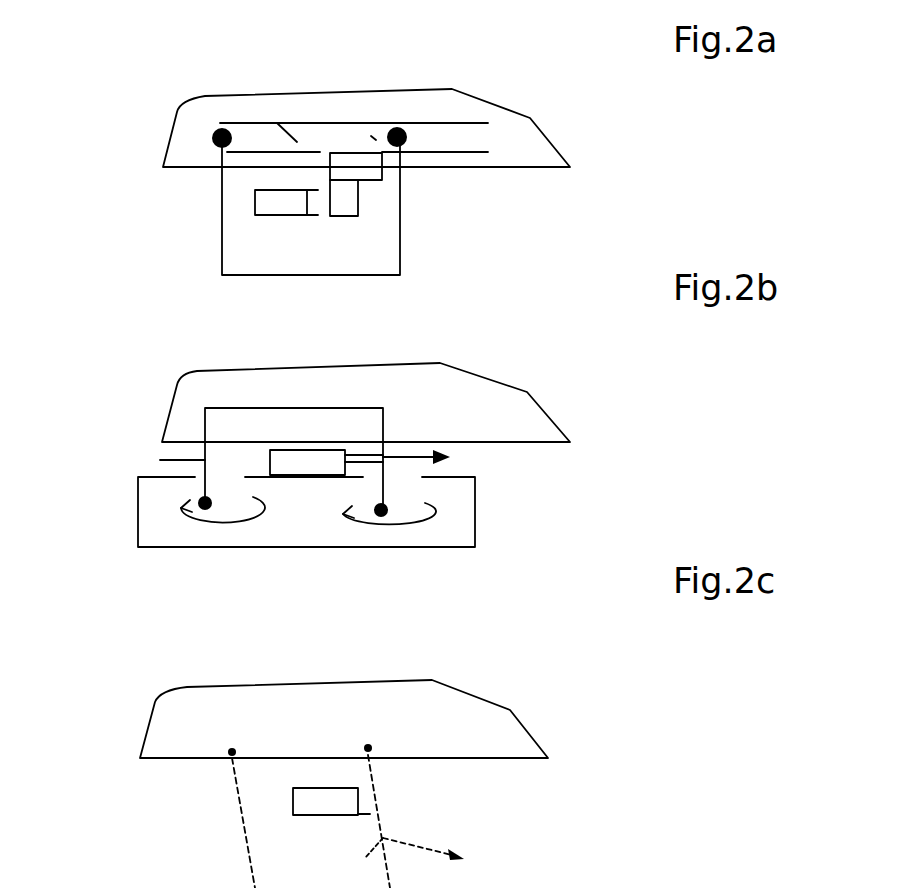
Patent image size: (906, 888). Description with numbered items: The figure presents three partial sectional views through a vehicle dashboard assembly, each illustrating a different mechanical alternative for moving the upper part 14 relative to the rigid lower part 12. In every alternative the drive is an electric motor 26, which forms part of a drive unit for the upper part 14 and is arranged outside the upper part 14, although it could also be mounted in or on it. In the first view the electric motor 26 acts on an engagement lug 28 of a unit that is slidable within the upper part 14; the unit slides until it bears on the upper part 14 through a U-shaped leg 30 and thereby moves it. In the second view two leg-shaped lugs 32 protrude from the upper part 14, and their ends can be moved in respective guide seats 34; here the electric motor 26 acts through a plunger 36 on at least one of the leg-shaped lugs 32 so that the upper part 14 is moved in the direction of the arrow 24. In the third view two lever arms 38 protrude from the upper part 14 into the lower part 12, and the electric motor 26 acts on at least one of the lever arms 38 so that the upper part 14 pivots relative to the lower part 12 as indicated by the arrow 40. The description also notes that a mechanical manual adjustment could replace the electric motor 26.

In FIG. 2B, the rigid lower part 12 is at (457, 520).
In FIG. 2A, the upper part 14 is at (452, 103).
In FIG. 2B, the upper part 14 is at (430, 392).
In FIG. 2C, the upper part 14 is at (442, 723).
In FIG. 2B, the arrow 24 is at (483, 441).
In FIG. 2A, the electric motor 26 is at (288, 208).
In FIG. 2C, the electric motor 26 is at (320, 803).
In FIG. 2A, the engagement lug 28 is at (337, 190).
In FIG. 2B, the engagement lug 28 is at (302, 465).
In FIG. 2A, the U-shaped leg 30 is at (402, 243).
In FIG. 2B, the leg-shaped lugs 32 is at (160, 460).
In FIG. 2B, the guide seats 34 is at (227, 517).
In FIG. 2B, the plunger 36 is at (357, 480).
In FIG. 2C, the lever arms 38 is at (243, 822).
In FIG. 2C, the arrow 40 is at (383, 838).